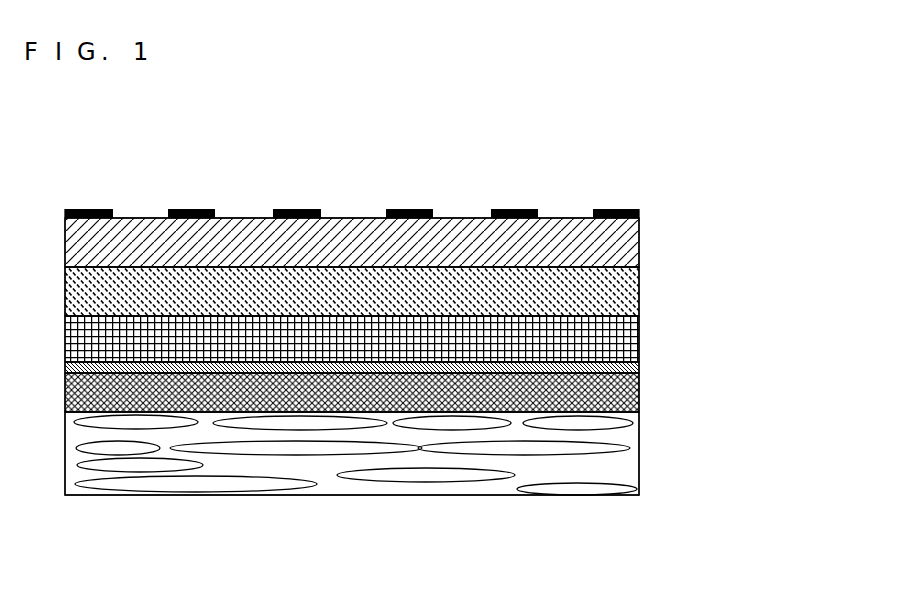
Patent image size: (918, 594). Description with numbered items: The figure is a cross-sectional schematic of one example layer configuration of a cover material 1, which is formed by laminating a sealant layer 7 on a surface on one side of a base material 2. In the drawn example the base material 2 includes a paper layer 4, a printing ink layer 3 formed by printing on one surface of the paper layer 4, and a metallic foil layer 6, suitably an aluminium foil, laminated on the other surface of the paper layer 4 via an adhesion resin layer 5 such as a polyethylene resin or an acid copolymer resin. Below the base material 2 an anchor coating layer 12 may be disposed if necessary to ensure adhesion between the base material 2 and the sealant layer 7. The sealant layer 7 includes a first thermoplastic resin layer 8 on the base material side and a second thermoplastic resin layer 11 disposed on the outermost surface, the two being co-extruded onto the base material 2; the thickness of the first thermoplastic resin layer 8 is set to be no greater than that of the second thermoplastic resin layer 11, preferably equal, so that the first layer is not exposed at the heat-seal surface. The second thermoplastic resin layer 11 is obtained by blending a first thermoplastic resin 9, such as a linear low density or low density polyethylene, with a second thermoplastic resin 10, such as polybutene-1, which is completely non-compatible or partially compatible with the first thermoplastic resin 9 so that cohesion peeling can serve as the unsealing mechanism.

The cover material 1 is at (57, 135).
The base material 2 is at (730, 194).
The printing ink layer 3 is at (640, 209).
The paper layer 4 is at (638, 233).
The adhesion resin layer 5 is at (640, 283).
The metallic foil layer 6 is at (640, 333).
The anchor coating layer 12 is at (640, 365).
The sealant layer 7 is at (800, 373).
The first thermoplastic resin layer 8 is at (640, 393).
The second thermoplastic resin layer 11 is at (735, 439).
The first thermoplastic resin 9 is at (620, 462).
The second thermoplastic resin 10 is at (610, 490).